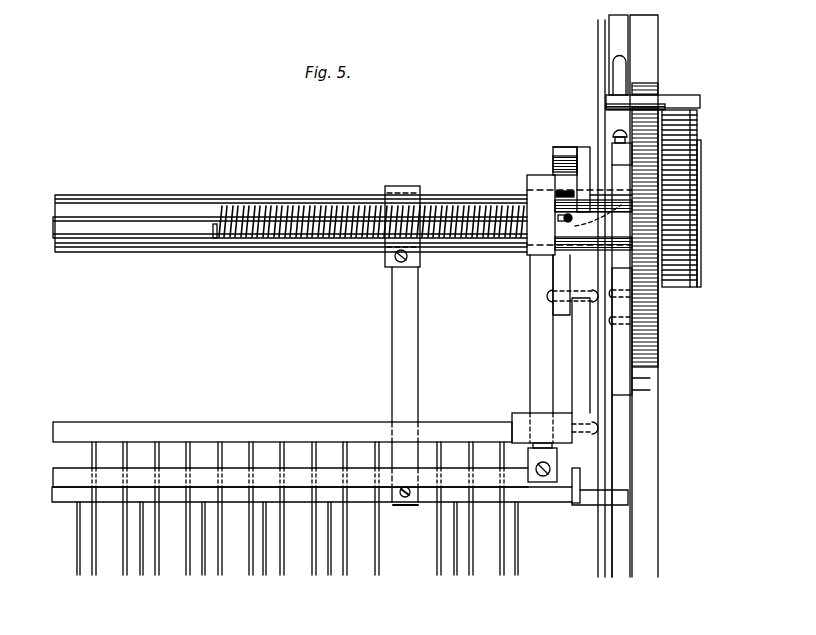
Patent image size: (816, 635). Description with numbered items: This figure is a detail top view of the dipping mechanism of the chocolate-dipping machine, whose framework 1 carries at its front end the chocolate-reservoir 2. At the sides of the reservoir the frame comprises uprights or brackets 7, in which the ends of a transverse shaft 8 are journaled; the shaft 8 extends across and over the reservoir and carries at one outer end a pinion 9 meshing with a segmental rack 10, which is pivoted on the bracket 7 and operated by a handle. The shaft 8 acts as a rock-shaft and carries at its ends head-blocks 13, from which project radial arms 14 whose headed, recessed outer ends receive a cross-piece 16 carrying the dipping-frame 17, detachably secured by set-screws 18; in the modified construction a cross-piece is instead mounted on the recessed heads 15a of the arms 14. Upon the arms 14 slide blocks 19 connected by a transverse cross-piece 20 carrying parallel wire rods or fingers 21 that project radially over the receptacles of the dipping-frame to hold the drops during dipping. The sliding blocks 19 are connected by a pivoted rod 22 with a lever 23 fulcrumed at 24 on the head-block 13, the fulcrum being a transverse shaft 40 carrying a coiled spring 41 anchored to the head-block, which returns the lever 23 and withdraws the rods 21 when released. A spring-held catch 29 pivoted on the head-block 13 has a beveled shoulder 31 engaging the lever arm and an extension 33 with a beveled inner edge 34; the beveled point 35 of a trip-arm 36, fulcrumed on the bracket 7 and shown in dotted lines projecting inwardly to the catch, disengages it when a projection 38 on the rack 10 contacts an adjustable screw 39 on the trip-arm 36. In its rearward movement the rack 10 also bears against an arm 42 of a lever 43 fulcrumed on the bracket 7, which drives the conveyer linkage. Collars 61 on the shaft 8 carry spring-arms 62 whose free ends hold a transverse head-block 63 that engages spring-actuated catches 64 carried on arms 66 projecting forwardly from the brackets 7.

The framework 1 is at (640, 53).
The chocolate-reservoir 2 is at (598, 530).
The upright or bracket 7 is at (645, 288).
The transverse shaft 8 is at (176, 240).
The pinion 9 is at (680, 216).
The segmental rack 10 is at (701, 263).
The head-block 13 is at (534, 186).
The radial arm 14 is at (535, 305).
The recessed head 15a is at (553, 463).
The cross-piece 16 is at (451, 470).
The dipping-frame 17 is at (513, 540).
The set-screw 18 is at (546, 487).
The sliding block 19 is at (526, 431).
The transverse cross-piece 20 is at (256, 430).
The wire rod or finger 21 is at (190, 450).
The pivoted rod 22 is at (579, 330).
The lever 23 is at (562, 275).
The fulcrum 24 is at (562, 223).
The catch 29 is at (562, 150).
The beveled shoulder 31 is at (557, 160).
The extension 33 is at (583, 160).
The beveled inner edge 34 is at (559, 203).
The beveled point or end 35 is at (581, 246).
The trip-arm 36 is at (618, 169).
The projection 38 is at (648, 98).
The adjustable projecting screw 39 is at (617, 134).
The transverse shaft 40 is at (94, 205).
The coiled spring 41 is at (321, 240).
The arm 42 is at (616, 72).
The lever 43 is at (617, 42).
The collar 61 is at (386, 246).
The spring-arm 62 is at (410, 346).
The transverse head-block 63 is at (363, 499).
The spring-actuated catch 64 is at (581, 480).
The arm 66 is at (626, 411).